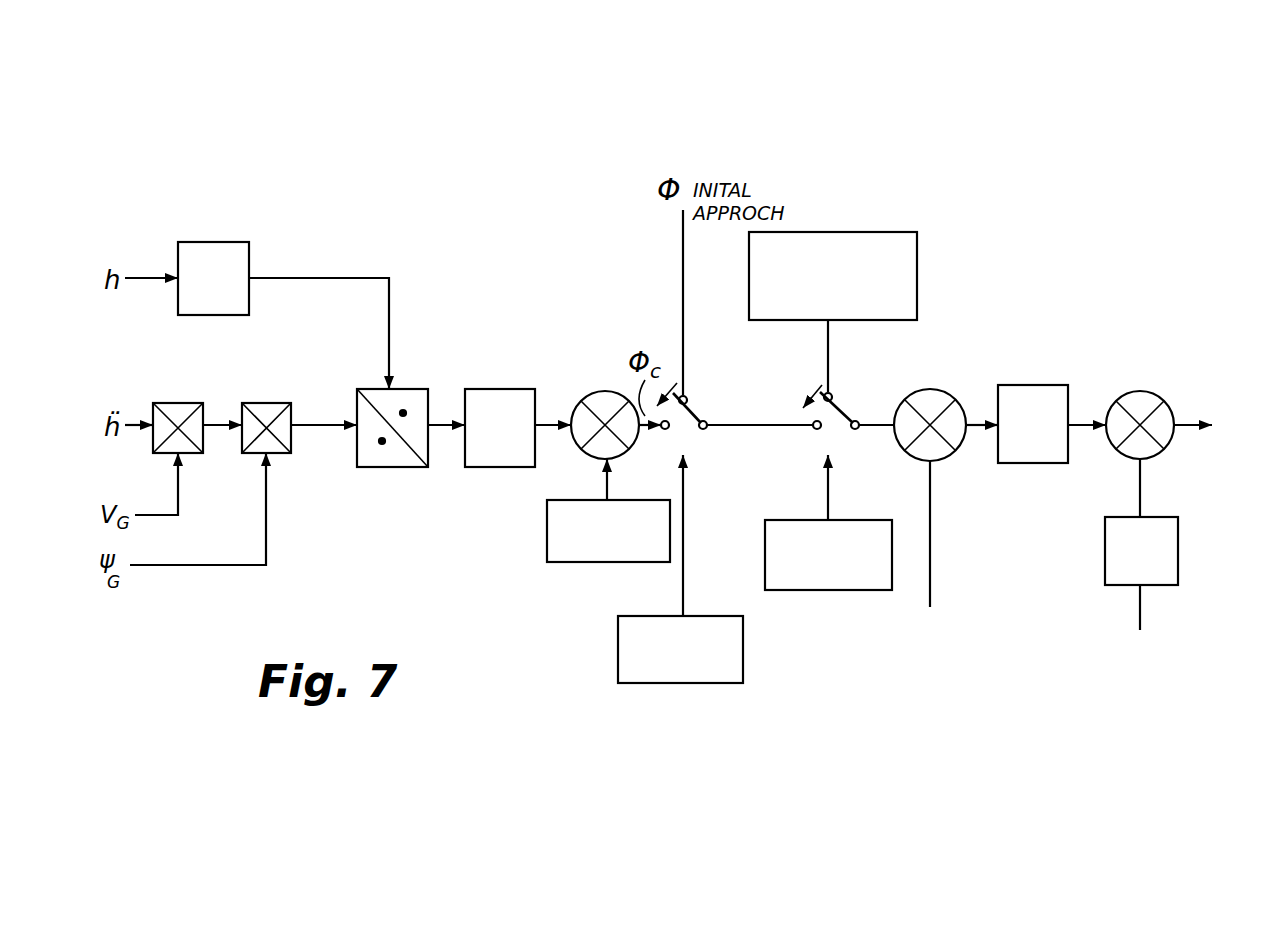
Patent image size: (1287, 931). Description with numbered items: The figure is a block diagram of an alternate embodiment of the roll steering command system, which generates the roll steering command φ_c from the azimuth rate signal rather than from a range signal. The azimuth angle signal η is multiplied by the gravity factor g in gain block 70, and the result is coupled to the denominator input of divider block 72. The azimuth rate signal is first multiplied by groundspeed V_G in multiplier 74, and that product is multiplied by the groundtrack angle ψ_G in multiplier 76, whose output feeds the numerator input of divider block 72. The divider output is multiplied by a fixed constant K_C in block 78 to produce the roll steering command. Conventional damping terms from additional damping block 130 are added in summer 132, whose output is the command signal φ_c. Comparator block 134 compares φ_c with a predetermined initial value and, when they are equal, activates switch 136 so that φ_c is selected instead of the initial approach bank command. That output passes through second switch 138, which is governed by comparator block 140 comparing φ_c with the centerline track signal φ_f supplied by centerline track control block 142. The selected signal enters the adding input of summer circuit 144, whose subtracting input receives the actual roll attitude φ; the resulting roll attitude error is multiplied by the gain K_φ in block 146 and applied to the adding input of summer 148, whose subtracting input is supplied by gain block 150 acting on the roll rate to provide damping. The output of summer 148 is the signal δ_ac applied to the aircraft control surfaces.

The gain block 70 is at (228, 242).
The multiplier 74 is at (172, 403).
The multiplier 76 is at (272, 403).
The divider block 72 is at (418, 389).
The gain block 78 is at (497, 389).
The summer 132 is at (598, 392).
The additional damping block 130 is at (547, 545).
The switch 136 is at (705, 410).
The comparator block 134 is at (705, 683).
The centerline track control block 142 is at (855, 232).
The second switch 138 is at (843, 400).
The comparator block 140 is at (837, 590).
The summer circuit 144 is at (940, 391).
The gain block 146 is at (1040, 385).
The summer 148 is at (1150, 392).
The gain block 150 is at (1178, 549).